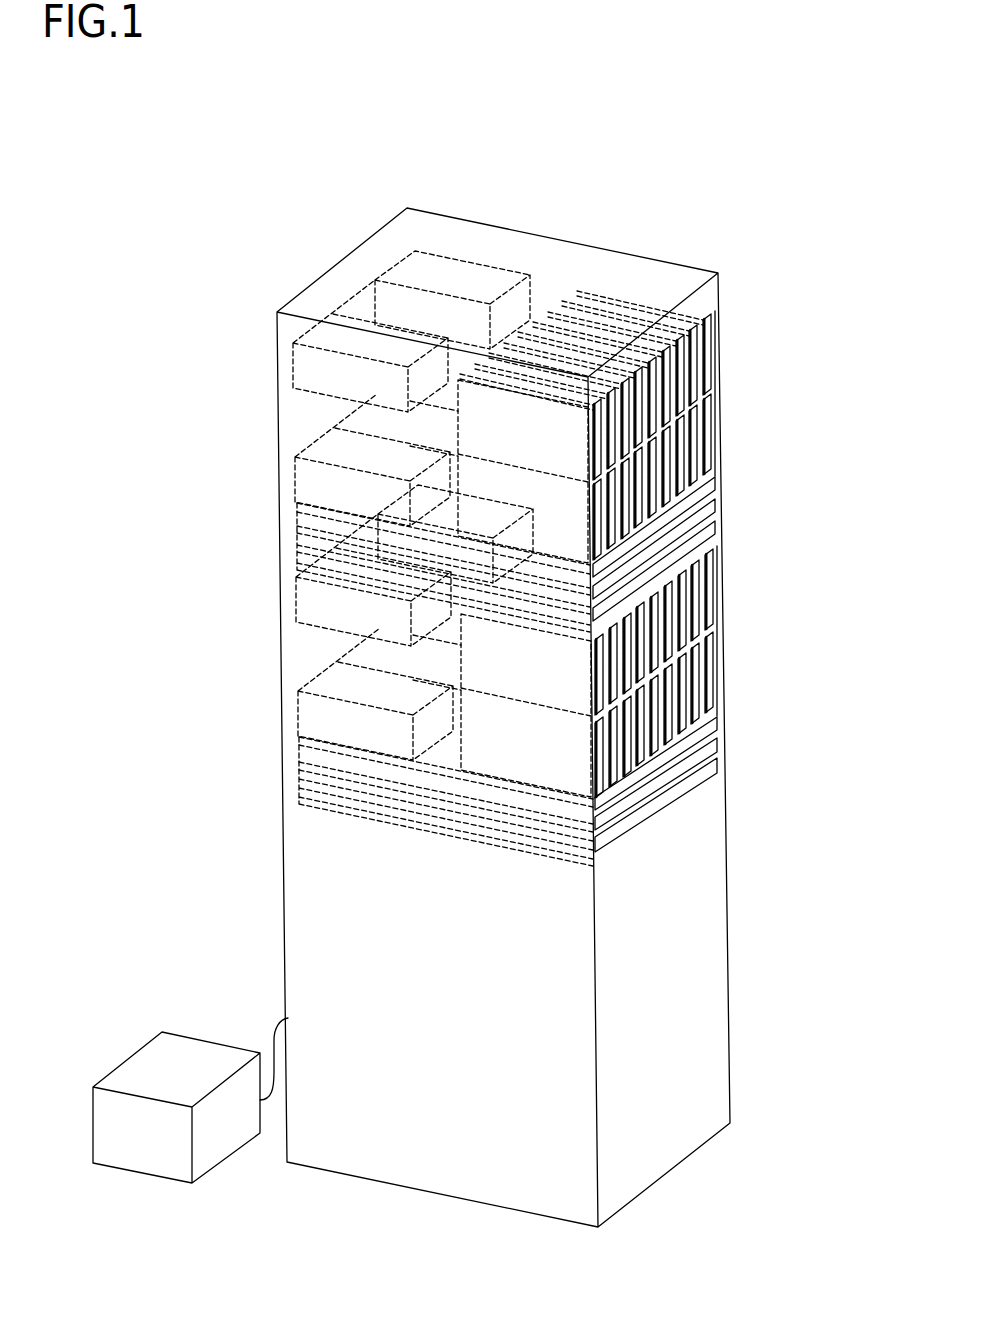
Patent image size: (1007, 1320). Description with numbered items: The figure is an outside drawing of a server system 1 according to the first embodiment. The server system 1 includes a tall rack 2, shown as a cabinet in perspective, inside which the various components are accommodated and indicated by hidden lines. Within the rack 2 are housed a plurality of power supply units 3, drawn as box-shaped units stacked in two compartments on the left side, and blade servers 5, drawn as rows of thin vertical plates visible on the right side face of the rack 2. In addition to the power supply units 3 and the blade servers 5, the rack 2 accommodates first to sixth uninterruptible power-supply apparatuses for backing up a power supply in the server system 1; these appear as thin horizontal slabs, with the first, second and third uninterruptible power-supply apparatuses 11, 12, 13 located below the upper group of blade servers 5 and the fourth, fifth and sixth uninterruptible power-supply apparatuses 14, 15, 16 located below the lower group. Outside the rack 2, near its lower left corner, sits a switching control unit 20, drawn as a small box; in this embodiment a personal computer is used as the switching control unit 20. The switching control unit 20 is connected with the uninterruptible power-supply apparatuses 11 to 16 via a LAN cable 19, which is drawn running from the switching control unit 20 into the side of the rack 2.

The server system 1 is at (219, 190).
The rack 2 is at (542, 236).
The power supply units 3 is at (352, 300).
The blade servers 5 is at (655, 473).
The first uninterruptible power-supply apparatus 11 is at (712, 490).
The second uninterruptible power-supply apparatus 12 is at (712, 511).
The third uninterruptible power-supply apparatus 13 is at (712, 533).
The fourth uninterruptible power-supply apparatus 14 is at (713, 725).
The fifth uninterruptible power-supply apparatus 15 is at (713, 745).
The sixth uninterruptible power-supply apparatus 16 is at (713, 771).
The LAN cable 19 is at (275, 1060).
The switching control unit 20 is at (127, 1058).